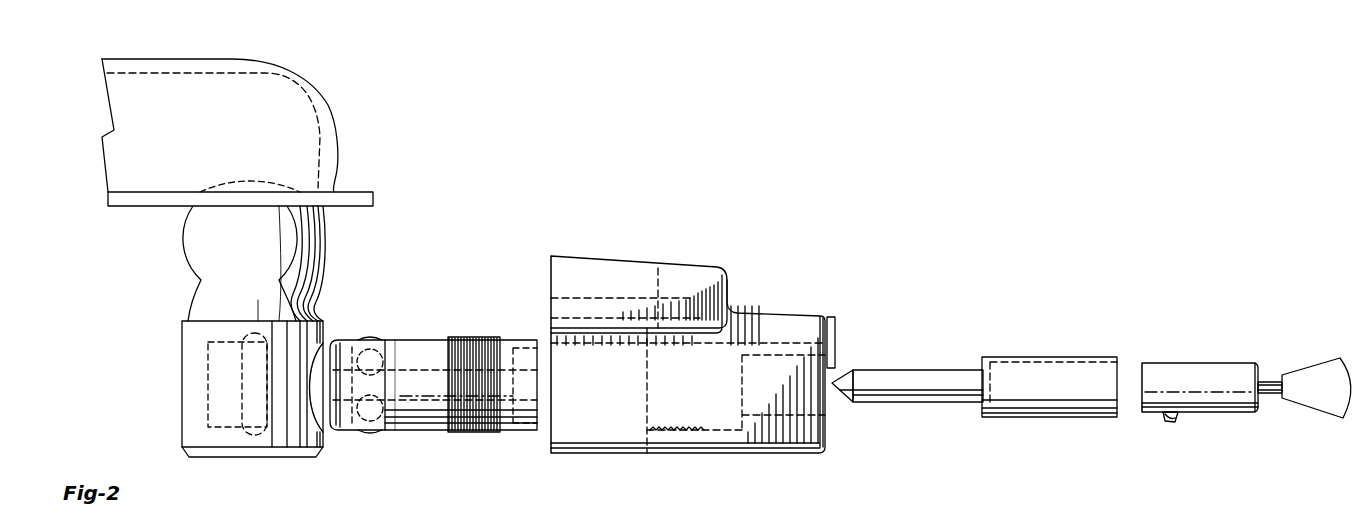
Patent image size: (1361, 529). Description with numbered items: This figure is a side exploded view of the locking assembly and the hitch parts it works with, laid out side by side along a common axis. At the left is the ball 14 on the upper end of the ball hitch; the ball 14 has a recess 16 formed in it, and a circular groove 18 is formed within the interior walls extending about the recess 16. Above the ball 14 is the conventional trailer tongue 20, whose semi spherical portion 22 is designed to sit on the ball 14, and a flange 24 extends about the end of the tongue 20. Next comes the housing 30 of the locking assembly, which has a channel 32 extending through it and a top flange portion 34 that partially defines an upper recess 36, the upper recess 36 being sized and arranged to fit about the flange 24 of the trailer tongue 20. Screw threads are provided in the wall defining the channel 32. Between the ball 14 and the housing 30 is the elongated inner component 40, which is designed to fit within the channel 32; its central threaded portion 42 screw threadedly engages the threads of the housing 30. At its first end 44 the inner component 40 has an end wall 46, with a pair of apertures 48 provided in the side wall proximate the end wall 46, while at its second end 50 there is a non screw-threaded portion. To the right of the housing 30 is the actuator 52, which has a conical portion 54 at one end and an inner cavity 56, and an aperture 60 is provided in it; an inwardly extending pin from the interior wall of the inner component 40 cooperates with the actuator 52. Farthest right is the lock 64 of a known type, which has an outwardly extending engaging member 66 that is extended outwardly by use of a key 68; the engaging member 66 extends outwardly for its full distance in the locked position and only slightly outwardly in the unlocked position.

The ball 14 is at (273, 268).
The recess 16 is at (313, 382).
The circular groove 18 is at (252, 440).
The trailer tongue 20 is at (306, 66).
The semi spherical portion 22 is at (325, 100).
The flange 24 is at (358, 195).
The housing 30 is at (773, 313).
The channel 32 is at (701, 397).
The top flange portion 34 is at (610, 260).
The upper recess 36 is at (543, 278).
The elongated inner component 40 is at (427, 336).
The central threaded portion 42 is at (478, 433).
The first end 44 is at (422, 439).
The end wall 46 is at (330, 403).
The apertures 48 is at (367, 439).
The second end 50 is at (528, 439).
The actuator 52 is at (1025, 328).
The conical portion 54 is at (837, 363).
The inner cavity 56 is at (1125, 381).
The aperture 60 is at (1017, 416).
The lock 64 is at (1217, 367).
The engaging member 66 is at (1172, 418).
The key 68 is at (1318, 377).